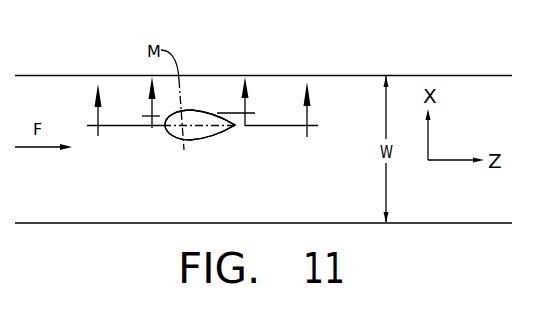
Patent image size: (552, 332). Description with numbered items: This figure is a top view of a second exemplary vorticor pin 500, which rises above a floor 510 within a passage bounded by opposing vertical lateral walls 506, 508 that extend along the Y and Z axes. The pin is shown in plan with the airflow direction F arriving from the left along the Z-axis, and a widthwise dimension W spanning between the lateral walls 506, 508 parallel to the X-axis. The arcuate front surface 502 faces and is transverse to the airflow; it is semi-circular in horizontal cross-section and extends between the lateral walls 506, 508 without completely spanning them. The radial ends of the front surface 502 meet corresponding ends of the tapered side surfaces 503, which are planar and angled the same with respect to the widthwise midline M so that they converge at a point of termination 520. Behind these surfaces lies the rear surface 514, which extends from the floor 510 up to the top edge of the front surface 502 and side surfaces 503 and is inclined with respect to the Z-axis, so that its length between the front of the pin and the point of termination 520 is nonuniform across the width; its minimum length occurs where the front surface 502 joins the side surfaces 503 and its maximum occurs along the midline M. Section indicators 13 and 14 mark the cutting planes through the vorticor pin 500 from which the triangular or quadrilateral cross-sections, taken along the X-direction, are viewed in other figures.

The vorticor pin 500 is at (186, 110).
The arcuate front surface 502 is at (163, 133).
The tapered side surfaces 503 is at (201, 110).
The lateral wall 506 is at (464, 222).
The lateral wall 508 is at (468, 76).
The floor 510 is at (446, 200).
The rear surface 514 is at (183, 141).
The point of termination 520 is at (236, 127).
The section line 13- 13 is at (204, 125).
The section line 14- 14 is at (196, 102).